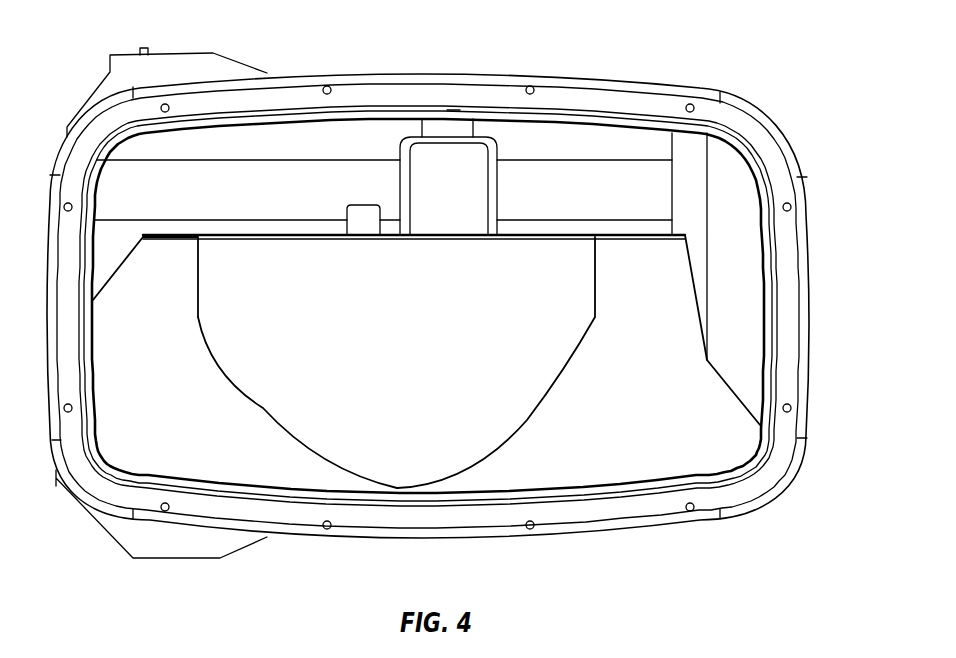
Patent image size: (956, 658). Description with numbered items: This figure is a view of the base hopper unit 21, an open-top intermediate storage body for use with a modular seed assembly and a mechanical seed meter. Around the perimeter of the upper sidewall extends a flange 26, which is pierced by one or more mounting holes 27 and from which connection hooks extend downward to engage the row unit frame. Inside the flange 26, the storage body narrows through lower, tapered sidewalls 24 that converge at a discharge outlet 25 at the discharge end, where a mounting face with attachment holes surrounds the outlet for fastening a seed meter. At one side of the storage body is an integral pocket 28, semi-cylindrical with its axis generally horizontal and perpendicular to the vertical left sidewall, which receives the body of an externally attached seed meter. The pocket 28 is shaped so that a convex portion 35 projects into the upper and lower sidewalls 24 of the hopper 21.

The base hopper unit 21 is at (667, 55).
The lower tapered sidewalls 24 is at (365, 143).
The discharge outlet 25 is at (440, 177).
The flange 26 is at (753, 127).
The mounting holes 27 is at (791, 407).
The integral pocket 28 is at (432, 388).
The convex portion 35 is at (262, 413).